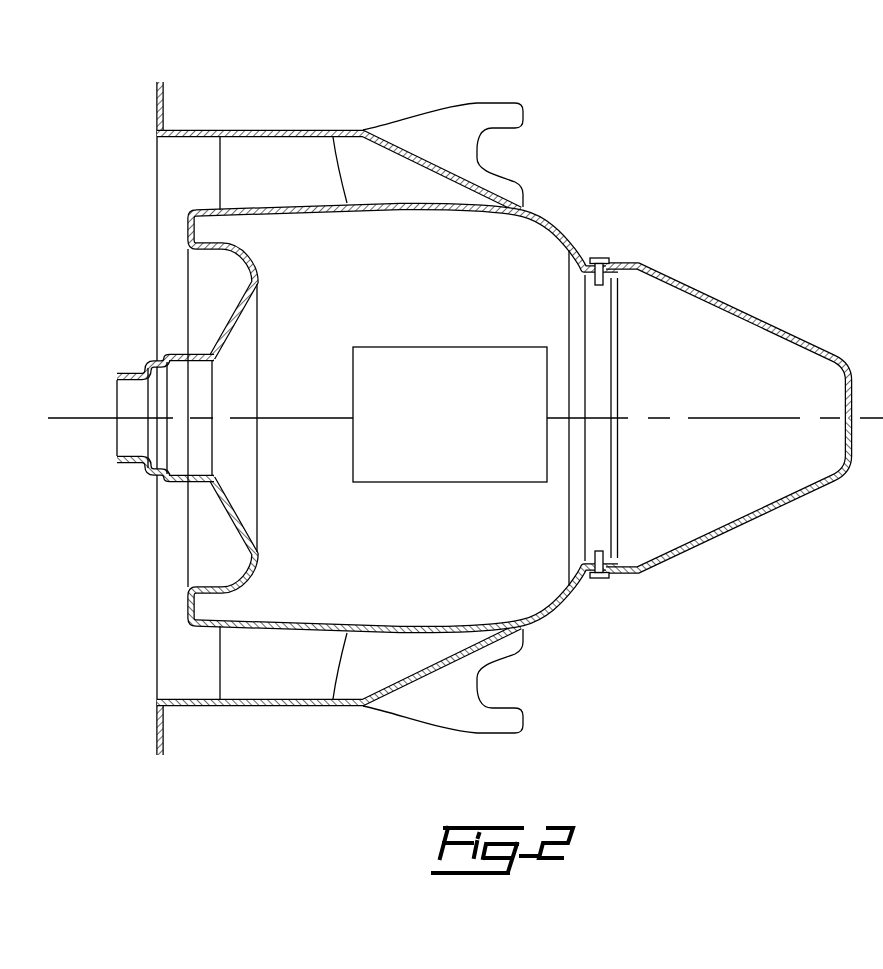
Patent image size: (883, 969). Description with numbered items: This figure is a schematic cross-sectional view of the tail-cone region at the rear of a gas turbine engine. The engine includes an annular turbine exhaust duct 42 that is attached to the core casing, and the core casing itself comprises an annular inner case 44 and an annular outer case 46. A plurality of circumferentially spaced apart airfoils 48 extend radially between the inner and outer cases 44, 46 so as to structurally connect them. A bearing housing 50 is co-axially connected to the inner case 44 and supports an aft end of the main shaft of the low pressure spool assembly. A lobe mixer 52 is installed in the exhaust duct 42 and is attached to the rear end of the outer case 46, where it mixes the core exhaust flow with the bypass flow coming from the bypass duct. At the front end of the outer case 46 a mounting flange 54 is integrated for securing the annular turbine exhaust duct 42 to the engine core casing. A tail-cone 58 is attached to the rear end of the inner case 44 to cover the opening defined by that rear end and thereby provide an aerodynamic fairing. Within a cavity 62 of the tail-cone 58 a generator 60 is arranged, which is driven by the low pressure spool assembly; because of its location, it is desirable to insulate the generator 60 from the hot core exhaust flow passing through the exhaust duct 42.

The annular turbine exhaust duct 42 is at (328, 100).
The annular inner case 44 is at (392, 209).
The annular outer case 46 is at (203, 129).
The airfoils 48 is at (300, 192).
The bearing housing 50 is at (200, 361).
The lobe mixer 52 is at (422, 106).
The mounting flange 54 is at (164, 103).
The tail-cone 58 is at (750, 310).
The generator 60 is at (390, 482).
The cavity 62 is at (522, 580).